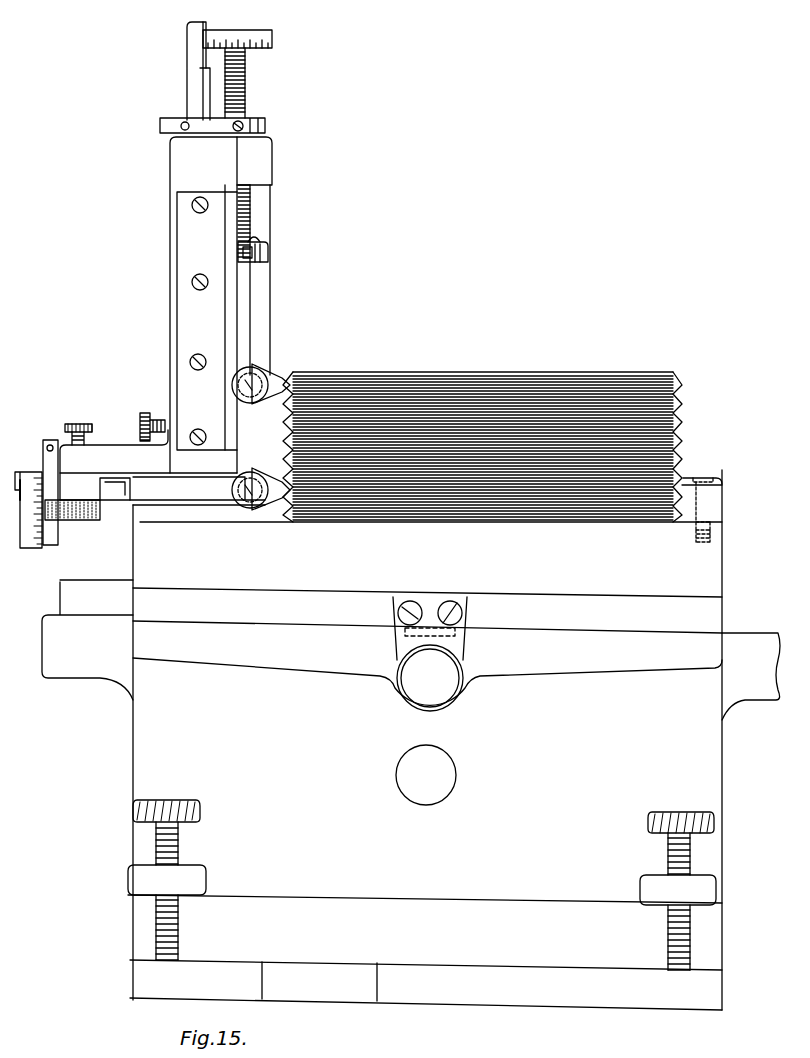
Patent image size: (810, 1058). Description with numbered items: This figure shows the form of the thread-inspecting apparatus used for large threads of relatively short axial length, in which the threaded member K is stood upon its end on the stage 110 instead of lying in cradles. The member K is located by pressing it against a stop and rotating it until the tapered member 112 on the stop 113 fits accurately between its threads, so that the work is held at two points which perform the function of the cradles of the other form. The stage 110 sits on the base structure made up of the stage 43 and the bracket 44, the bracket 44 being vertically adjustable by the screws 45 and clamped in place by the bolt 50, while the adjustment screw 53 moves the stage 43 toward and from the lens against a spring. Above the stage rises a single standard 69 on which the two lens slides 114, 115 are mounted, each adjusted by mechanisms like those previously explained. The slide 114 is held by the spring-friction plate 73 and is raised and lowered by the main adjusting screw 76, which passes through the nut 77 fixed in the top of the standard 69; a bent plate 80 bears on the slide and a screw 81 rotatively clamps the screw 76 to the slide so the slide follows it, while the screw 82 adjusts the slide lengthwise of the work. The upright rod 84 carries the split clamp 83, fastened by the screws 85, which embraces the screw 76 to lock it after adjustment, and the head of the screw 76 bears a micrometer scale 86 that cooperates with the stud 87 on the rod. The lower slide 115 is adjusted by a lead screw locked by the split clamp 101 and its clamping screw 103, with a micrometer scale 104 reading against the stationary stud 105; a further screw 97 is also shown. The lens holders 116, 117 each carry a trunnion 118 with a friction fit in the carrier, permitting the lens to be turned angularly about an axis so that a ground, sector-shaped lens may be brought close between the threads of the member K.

The threaded member K is at (528, 388).
The stage 43 is at (722, 610).
The bracket 44 is at (620, 668).
The screws 45 is at (178, 843).
The bolt 50 is at (450, 776).
The adjustment screw 53 is at (445, 686).
The standard 69 is at (175, 170).
The spring-friction plate 73 is at (180, 233).
The screw 76 is at (245, 90).
The nut 77 is at (262, 161).
The bent plate 80 is at (270, 256).
The screw 81 is at (262, 238).
The screw 82 is at (145, 413).
The split clamp 83 is at (268, 128).
The upright rod 84 is at (187, 90).
The screws 85 is at (182, 124).
The micrometer scale 86 is at (272, 35).
The stud 87 is at (196, 25).
The clamp screw 97 is at (86, 424).
The split clamp 101 is at (58, 468).
The clamping screw 103 is at (50, 516).
The micrometer scale 104 is at (35, 550).
The stationary stud 105 is at (20, 470).
The stage 110 is at (425, 740).
The tapered member 112 is at (680, 482).
The stop 113 is at (717, 502).
The slide 114 is at (263, 308).
The slide 115 is at (185, 500).
The lens holder 116 is at (285, 366).
The lens holder 117 is at (260, 505).
The trunnion 118 is at (262, 378).